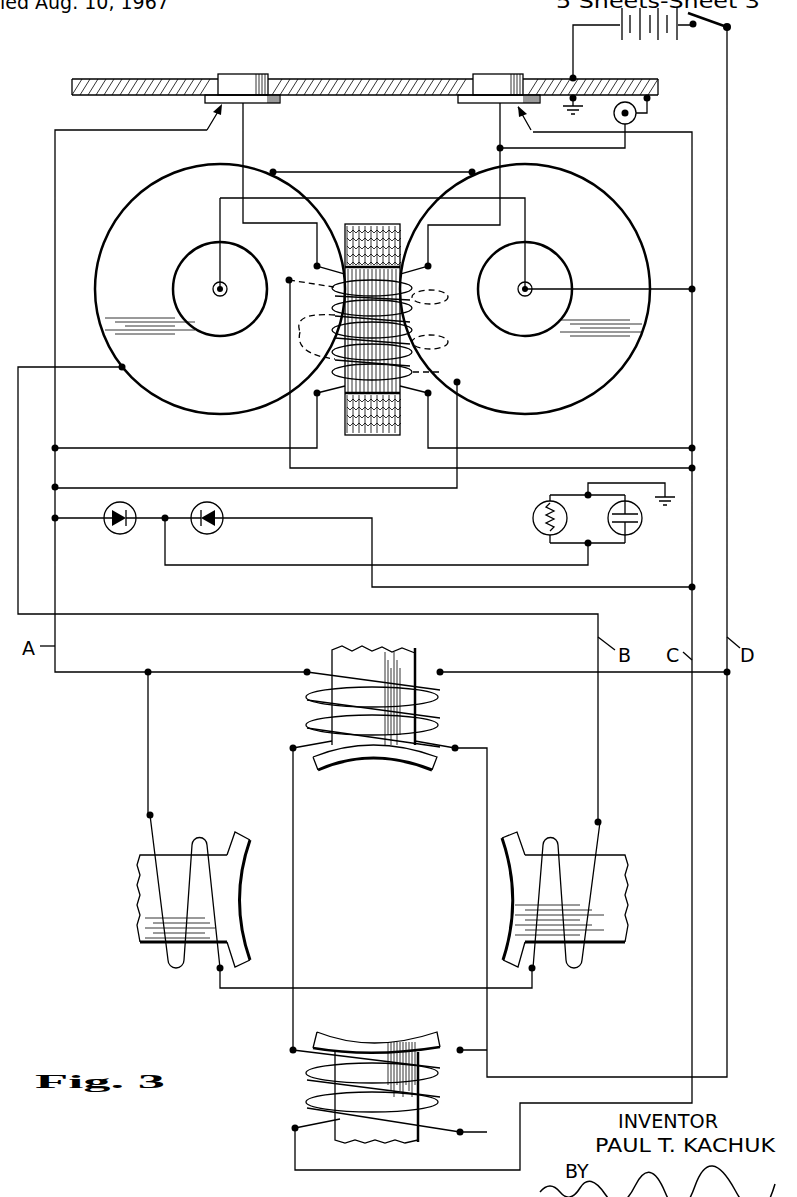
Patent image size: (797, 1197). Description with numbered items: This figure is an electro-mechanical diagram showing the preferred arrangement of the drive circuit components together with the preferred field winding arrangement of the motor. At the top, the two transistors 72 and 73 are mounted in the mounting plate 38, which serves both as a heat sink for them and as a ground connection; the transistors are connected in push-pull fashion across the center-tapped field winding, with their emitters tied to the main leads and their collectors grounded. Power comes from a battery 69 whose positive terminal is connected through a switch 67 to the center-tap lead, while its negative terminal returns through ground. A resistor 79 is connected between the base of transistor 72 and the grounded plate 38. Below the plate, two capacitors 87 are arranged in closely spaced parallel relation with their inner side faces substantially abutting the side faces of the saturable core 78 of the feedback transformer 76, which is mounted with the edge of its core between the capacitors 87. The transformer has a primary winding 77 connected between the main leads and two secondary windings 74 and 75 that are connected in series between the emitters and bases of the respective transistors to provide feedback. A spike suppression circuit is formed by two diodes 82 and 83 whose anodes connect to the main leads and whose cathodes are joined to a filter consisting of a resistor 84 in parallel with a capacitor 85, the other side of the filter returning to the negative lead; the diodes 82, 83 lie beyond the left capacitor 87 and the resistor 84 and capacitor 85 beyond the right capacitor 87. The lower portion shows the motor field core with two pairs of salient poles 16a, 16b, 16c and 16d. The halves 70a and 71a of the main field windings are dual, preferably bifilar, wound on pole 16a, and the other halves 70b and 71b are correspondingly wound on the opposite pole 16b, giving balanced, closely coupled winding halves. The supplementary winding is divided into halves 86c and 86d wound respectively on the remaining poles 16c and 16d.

The switch 67 is at (715, 15).
The power supply battery 69 is at (647, 38).
The resistor 79 is at (636, 116).
The mounting plate 38 is at (349, 78).
The transistor 73 is at (248, 76).
The transistor 72 is at (494, 76).
The capacitors 87 is at (190, 218).
The saturable core 78 is at (376, 234).
The secondary winding 74 is at (413, 272).
The secondary winding 75 is at (413, 366).
The feedback transformer 76 is at (388, 442).
The primary winding 77 is at (295, 322).
The diode 83 is at (123, 535).
The diode 82 is at (218, 530).
The resistor 84 is at (533, 519).
The capacitor 85 is at (640, 530).
The salient pole 16a is at (364, 758).
The field winding half 71a is at (440, 695).
The field winding half 70a is at (440, 723).
The salient pole 16b is at (372, 1043).
The field winding half 71b is at (307, 1073).
The field winding half 70b is at (307, 1100).
The salient pole 16c is at (523, 893).
The supplementary winding half 86c is at (600, 838).
The salient pole 16d is at (222, 887).
The supplementary winding half 86d is at (199, 838).